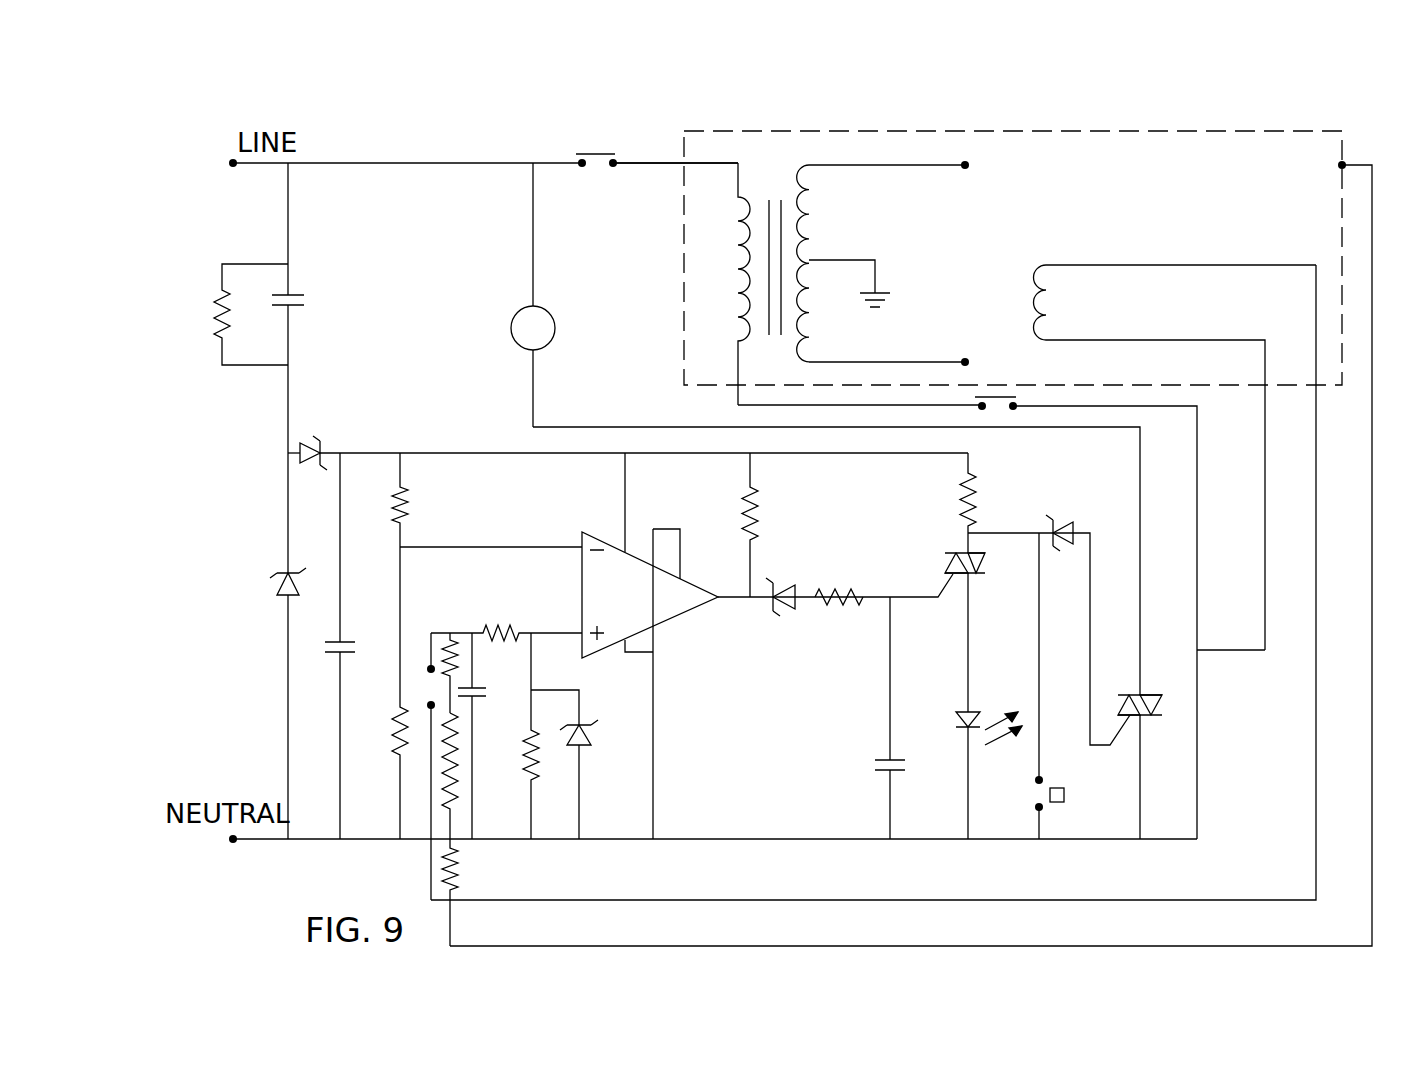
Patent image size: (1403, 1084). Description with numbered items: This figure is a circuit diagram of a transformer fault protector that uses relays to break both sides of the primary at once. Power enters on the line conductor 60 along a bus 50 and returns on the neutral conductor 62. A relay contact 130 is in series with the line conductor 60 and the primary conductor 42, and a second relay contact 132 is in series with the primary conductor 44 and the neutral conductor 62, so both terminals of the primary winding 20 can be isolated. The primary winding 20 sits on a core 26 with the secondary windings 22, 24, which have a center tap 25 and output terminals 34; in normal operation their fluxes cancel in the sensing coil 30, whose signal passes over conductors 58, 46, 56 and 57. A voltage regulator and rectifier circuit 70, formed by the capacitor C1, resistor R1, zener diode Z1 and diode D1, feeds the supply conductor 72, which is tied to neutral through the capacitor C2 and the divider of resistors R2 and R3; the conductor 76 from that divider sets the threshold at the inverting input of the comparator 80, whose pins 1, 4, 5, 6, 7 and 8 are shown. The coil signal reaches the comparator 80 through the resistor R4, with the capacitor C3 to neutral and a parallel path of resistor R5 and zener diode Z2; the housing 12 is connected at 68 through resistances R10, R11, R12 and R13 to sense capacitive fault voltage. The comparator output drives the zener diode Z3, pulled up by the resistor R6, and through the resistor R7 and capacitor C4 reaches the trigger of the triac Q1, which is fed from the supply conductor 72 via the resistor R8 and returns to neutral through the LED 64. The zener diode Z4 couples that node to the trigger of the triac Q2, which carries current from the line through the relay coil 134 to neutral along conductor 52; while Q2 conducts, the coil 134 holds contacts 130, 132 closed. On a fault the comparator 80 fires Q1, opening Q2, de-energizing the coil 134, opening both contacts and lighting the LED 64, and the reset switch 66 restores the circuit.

The line conductor 50 is at (413, 163).
The line conductor 60 is at (250, 168).
The neutral conductor 62 is at (233, 839).
The relay contact 130 is at (595, 154).
The primary conductor 42 is at (650, 163).
The relay coil 134 is at (512, 312).
The voltage regulator and rectifier circuit 70 is at (350, 355).
The supply conductor 72 is at (500, 453).
The housing 12 is at (684, 195).
The primary winding 20 is at (735, 292).
The core 26 is at (792, 232).
The secondary winding 22 is at (800, 215).
The secondary winding 24 is at (812, 318).
The center tap 25 is at (835, 260).
The output terminals 34 is at (965, 165).
The primary conductor 44 is at (735, 354).
The sensing coil 30 is at (1034, 283).
The conductor 58 is at (1125, 265).
The conductor 46 is at (1196, 340).
The conductor 56 is at (1265, 435).
The relay contact 132 is at (993, 397).
The conductor 52 is at (1070, 406).
The housing connection 68 is at (1372, 545).
The conductor 57 is at (1197, 773).
The conductor 76 is at (515, 547).
The voltage comparator 80 is at (752, 646).
The LED 64 is at (958, 714).
The reset switch 66 is at (1064, 795).
The comparator pin 1 is at (656, 618).
The comparator pin 4 is at (633, 637).
The comparator pin 5 is at (662, 563).
The comparator pin 6 is at (670, 684).
The comparator output pin 7 is at (726, 597).
The comparator supply pin 8 is at (619, 521).
The capacitor C1 is at (296, 298).
The capacitor C2 is at (336, 655).
The capacitor C3 is at (477, 692).
The capacitor C4 is at (880, 762).
The resistor R1 is at (222, 318).
The resistor R2 is at (405, 510).
The resistor R3 is at (400, 735).
The resistor R4 is at (505, 633).
The resistor R5 is at (533, 752).
The resistor R6 is at (755, 508).
The resistor R7 is at (845, 585).
The resistor R8 is at (975, 508).
The resistance R10 is at (453, 655).
The resistance R11 is at (455, 722).
The resistance R12 is at (455, 795).
The resistance R13 is at (452, 872).
The diode D1 is at (310, 443).
The zener diode Z1 is at (284, 597).
The zener diode Z2 is at (588, 735).
The zener diode Z3 is at (790, 585).
The zener diode Z4 is at (1062, 520).
The triac Q1 is at (985, 565).
The triac Q2 is at (1162, 705).